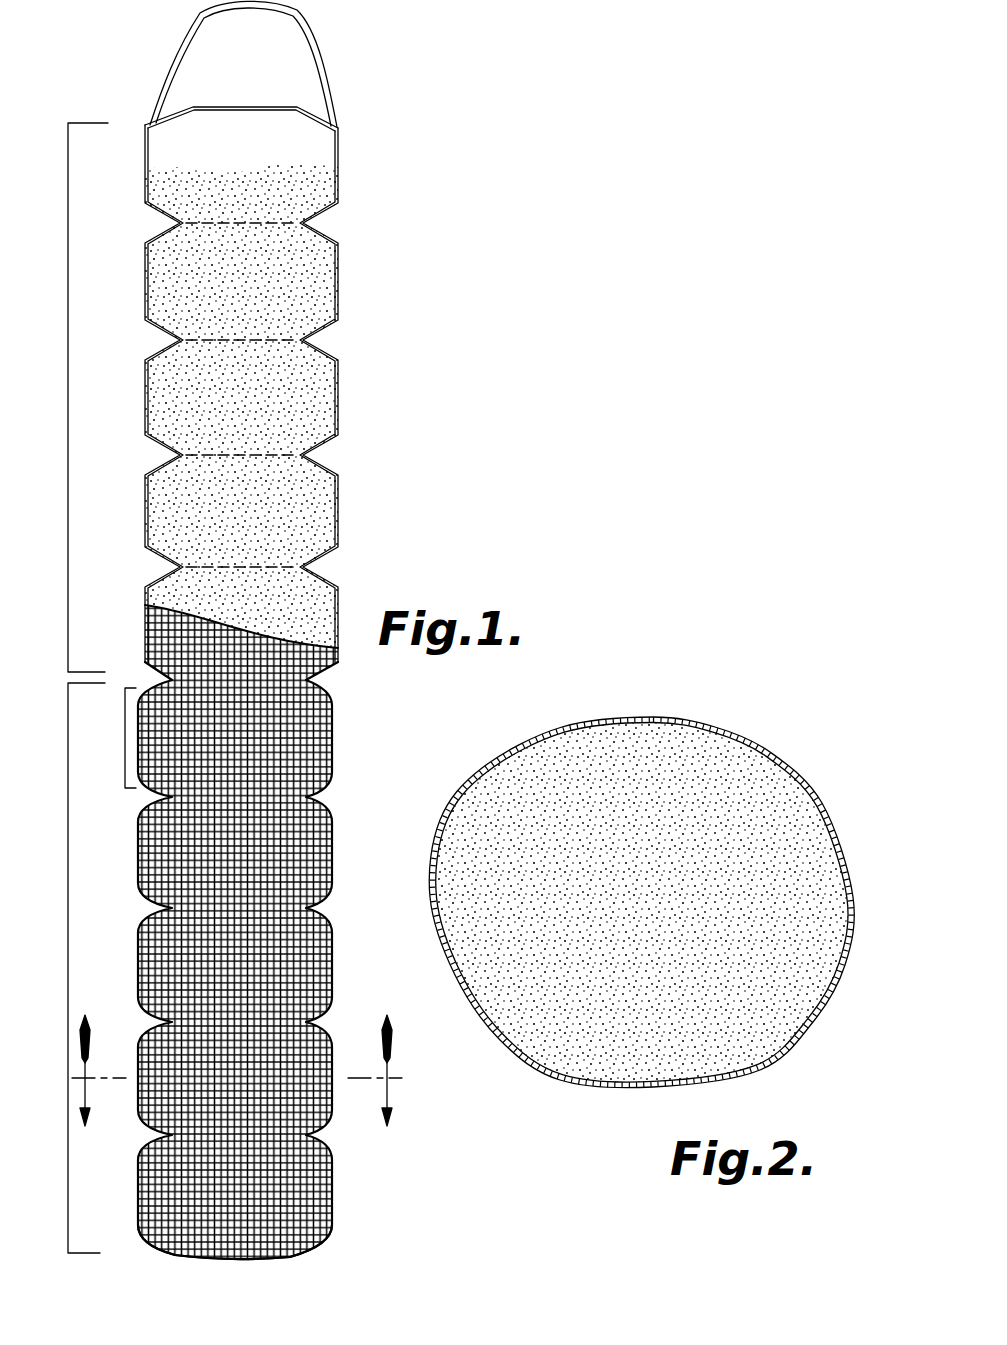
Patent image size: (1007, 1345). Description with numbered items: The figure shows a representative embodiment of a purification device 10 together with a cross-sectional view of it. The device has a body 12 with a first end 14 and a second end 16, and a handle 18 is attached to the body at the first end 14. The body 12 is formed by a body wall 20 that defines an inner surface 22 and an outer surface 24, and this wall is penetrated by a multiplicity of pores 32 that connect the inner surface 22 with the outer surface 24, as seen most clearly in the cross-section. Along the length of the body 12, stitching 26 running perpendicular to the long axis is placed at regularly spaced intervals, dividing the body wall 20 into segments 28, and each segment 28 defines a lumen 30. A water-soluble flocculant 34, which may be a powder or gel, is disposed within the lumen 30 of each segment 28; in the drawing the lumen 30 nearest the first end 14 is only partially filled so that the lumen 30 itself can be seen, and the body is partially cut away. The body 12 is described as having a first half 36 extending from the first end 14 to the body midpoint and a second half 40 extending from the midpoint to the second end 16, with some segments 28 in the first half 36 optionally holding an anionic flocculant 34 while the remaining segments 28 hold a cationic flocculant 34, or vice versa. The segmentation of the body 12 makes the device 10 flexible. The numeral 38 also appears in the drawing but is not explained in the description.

In FIG. 1, the purification device 10 is at (82, 45).
In FIG. 1, the body 12 is at (410, 472).
In FIG. 2, the body 12 is at (845, 858).
In FIG. 1, the first end 14 is at (147, 125).
In FIG. 1, the second end 16 is at (278, 1258).
In FIG. 1, the handle 18 is at (322, 58).
In FIG. 1, the body wall 20 is at (340, 398).
In FIG. 2, the body wall 20 is at (762, 745).
In FIG. 2, the inner surface 22 is at (556, 747).
In FIG. 2, the outer surface 24 is at (614, 719).
In FIG. 1, the stitching 26 is at (308, 568).
In FIG. 1, the segment 28 is at (125, 737).
In FIG. 1, the lumen 30 is at (322, 146).
In FIG. 2, the pores 32 is at (487, 1020).
In FIG. 1, the water-soluble flocculant 34 is at (167, 263).
In FIG. 2, the water-soluble flocculant 34 is at (783, 1012).
In FIG. 1, the first half 36 is at (68, 394).
In FIG. 1, the transition boundary 38 is at (152, 676).
In FIG. 1, the second half 40 is at (68, 961).